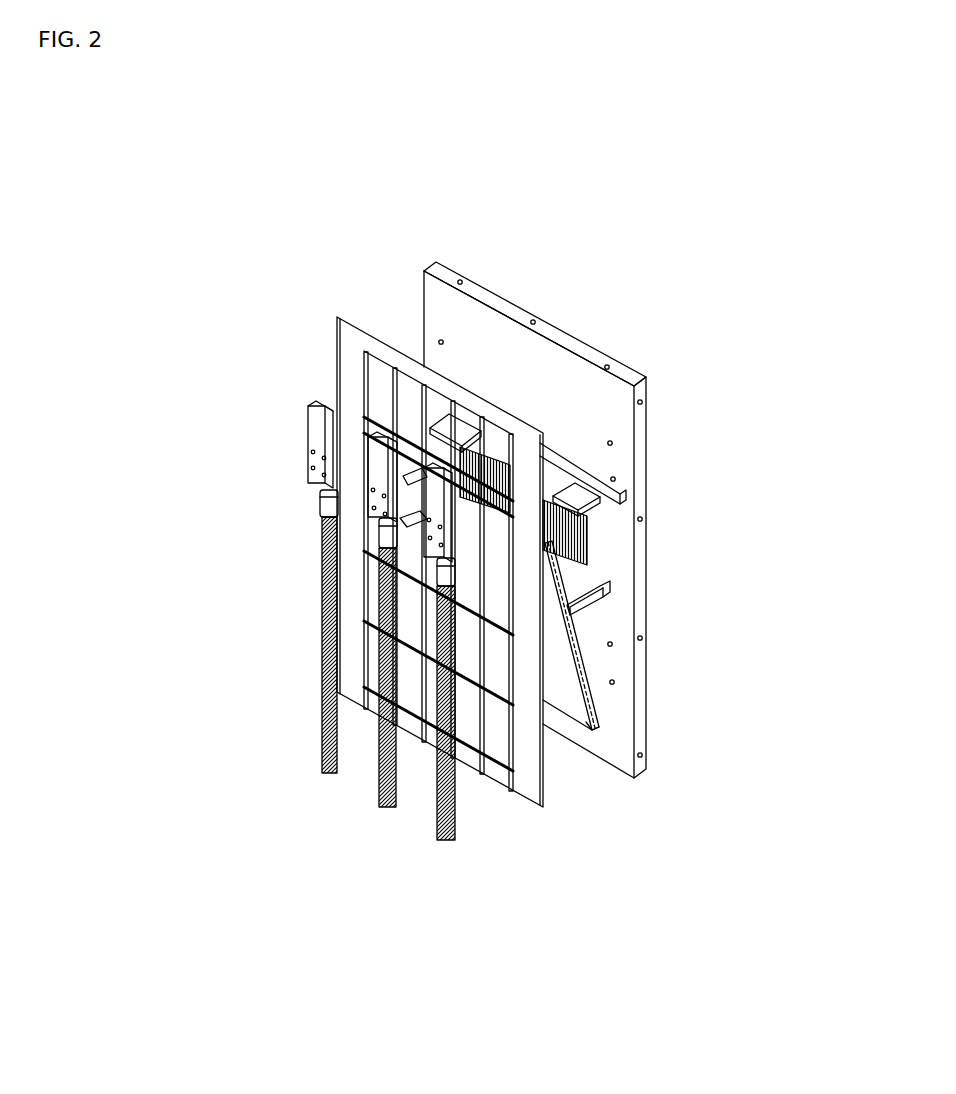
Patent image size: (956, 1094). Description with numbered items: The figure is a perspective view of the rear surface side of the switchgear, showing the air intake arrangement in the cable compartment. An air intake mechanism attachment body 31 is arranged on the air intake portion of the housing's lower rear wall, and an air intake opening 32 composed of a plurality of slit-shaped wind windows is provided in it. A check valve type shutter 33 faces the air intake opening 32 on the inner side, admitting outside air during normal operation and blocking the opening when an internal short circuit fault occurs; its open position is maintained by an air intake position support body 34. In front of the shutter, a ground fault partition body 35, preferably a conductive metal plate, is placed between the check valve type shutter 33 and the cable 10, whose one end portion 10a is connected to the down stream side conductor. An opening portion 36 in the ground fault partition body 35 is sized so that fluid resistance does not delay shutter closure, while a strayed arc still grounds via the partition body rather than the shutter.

The cable 10 is at (320, 673).
The one end portion of the cable 10a is at (320, 430).
The air intake mechanism attachment body 31 is at (647, 445).
The air intake opening 32 is at (572, 533).
The check valve type shutter 33 is at (555, 667).
The air intake position support body 34 is at (590, 603).
The ground fault partition body 35 is at (530, 733).
The opening portion 36 is at (410, 395).